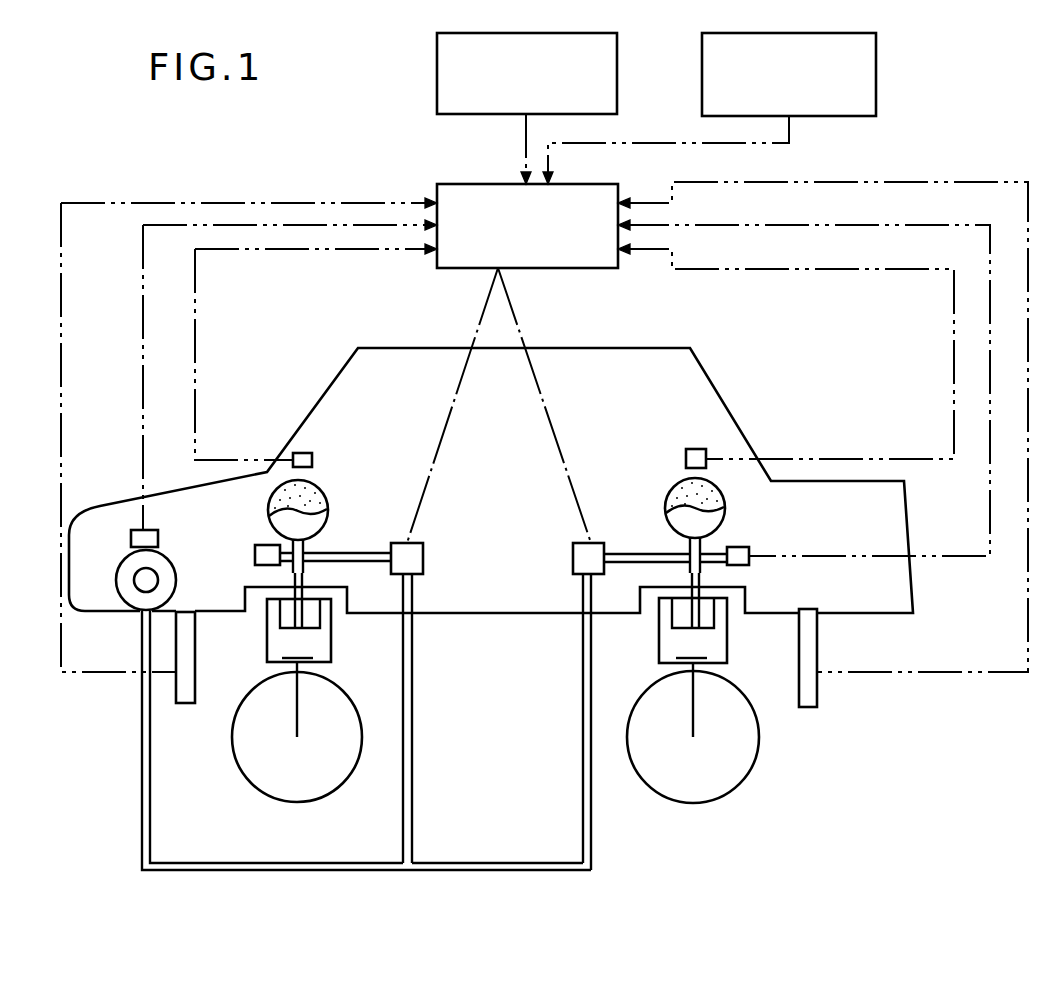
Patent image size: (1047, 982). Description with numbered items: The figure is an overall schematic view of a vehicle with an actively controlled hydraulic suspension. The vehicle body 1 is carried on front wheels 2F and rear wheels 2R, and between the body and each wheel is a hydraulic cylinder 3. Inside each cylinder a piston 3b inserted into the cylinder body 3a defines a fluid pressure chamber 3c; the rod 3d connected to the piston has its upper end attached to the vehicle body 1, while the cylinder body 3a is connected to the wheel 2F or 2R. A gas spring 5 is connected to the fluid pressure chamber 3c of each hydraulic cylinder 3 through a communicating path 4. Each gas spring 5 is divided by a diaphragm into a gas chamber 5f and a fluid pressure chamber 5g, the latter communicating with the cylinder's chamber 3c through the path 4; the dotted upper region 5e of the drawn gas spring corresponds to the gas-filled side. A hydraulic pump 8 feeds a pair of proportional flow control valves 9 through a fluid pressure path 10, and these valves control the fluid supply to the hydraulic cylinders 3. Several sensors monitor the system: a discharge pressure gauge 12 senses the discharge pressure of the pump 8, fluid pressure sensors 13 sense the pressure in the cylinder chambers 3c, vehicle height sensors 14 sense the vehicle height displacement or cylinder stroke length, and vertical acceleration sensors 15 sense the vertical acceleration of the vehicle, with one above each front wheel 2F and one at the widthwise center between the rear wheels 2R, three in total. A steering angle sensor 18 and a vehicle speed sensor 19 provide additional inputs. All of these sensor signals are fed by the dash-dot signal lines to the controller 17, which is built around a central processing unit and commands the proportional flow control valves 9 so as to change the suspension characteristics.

The vehicle body 1 is at (645, 343).
The front vehicle wheel 2F is at (345, 783).
The rear vehicle wheel 2R is at (744, 783).
The hydraulic cylinder 3 is at (497, 640).
The cylinder body 3a is at (331, 622).
The piston 3b is at (280, 628).
The fluid pressure chamber 3c is at (345, 676).
The rod 3d is at (292, 578).
The communicating path 4 is at (305, 553).
The gas spring 5 is at (470, 492).
The gas chamber 5e is at (271, 516).
The gas chamber 5f is at (312, 487).
The fluid pressure chamber 5g is at (292, 523).
The hydraulic pump 8 is at (128, 592).
The proportional flow control valve 9 is at (573, 555).
The fluid pressure path 10 is at (320, 863).
The discharge pressure gauge 12 is at (132, 530).
The fluid pressure sensor 13 is at (255, 557).
The vehicle height sensor 14 is at (185, 703).
The vertical acceleration sensor 15 is at (302, 453).
The controller 17 is at (484, 184).
The steering angle sensor 18 is at (617, 66).
The vehicle speed sensor 19 is at (876, 66).